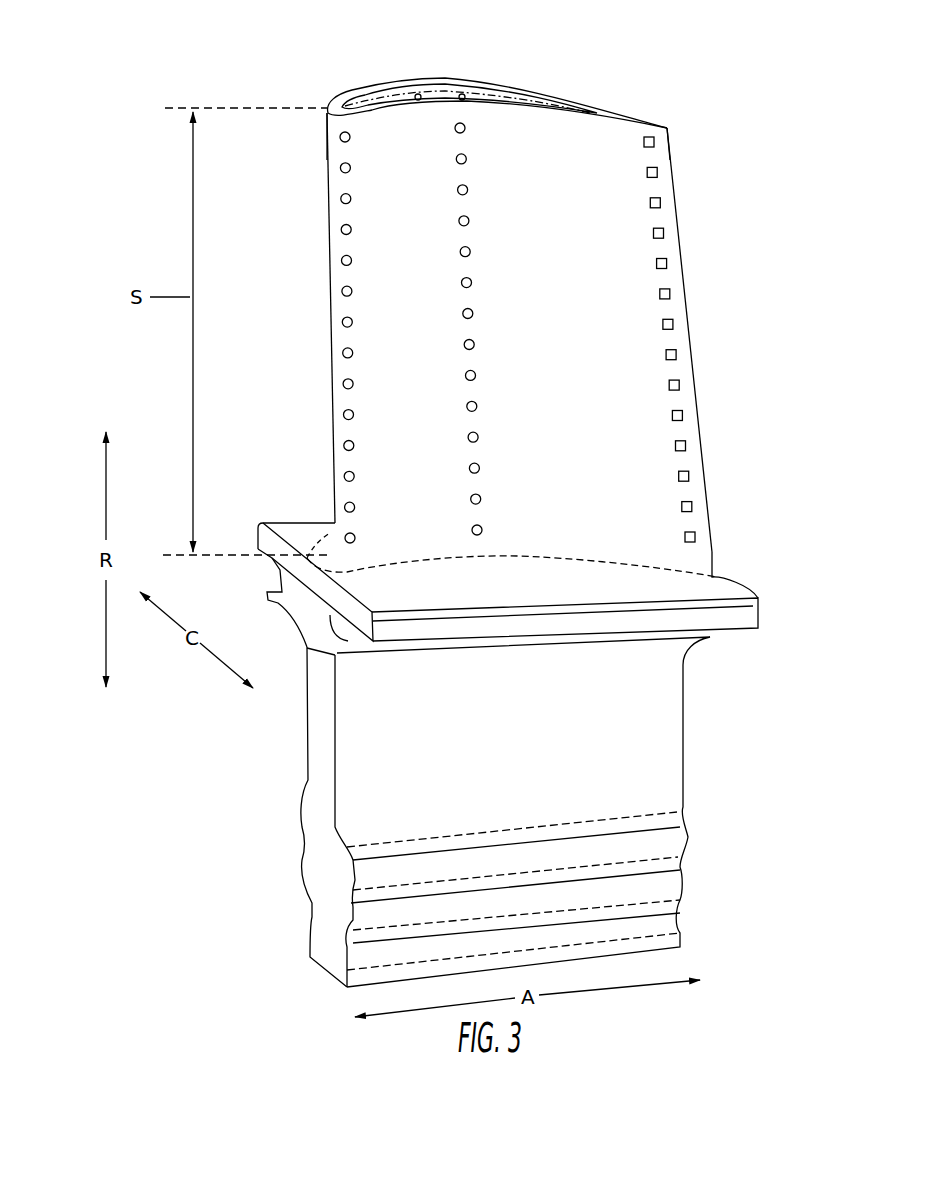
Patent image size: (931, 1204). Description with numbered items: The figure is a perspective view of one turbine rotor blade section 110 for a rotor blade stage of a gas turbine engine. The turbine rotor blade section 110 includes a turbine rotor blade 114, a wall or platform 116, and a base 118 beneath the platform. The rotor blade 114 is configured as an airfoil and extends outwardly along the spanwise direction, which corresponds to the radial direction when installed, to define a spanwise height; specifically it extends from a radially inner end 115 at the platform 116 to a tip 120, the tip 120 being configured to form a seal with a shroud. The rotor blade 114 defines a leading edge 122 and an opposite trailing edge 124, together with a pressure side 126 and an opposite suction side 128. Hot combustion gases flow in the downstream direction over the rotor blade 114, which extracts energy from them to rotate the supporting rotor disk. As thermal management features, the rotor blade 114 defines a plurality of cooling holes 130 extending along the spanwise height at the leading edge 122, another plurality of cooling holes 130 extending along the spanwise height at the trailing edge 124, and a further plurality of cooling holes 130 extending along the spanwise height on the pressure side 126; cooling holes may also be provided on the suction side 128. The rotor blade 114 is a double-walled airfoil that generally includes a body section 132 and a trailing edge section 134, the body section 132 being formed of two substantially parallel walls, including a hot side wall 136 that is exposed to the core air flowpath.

The turbine rotor blade section 110 is at (117, 148).
The turbine rotor blade 114 is at (630, 300).
The radially inner end 115 is at (574, 556).
The platform 116 is at (458, 598).
The base 118 is at (709, 772).
The tip 120 is at (488, 82).
The leading edge 122 is at (330, 335).
The trailing edge 124 is at (694, 373).
The pressure side 126 is at (398, 268).
The suction side 128 is at (327, 125).
The cooling holes 130 is at (340, 230).
The body section 132 is at (419, 135).
The trailing edge section 134 is at (629, 150).
The hot side wall 136 is at (438, 422).